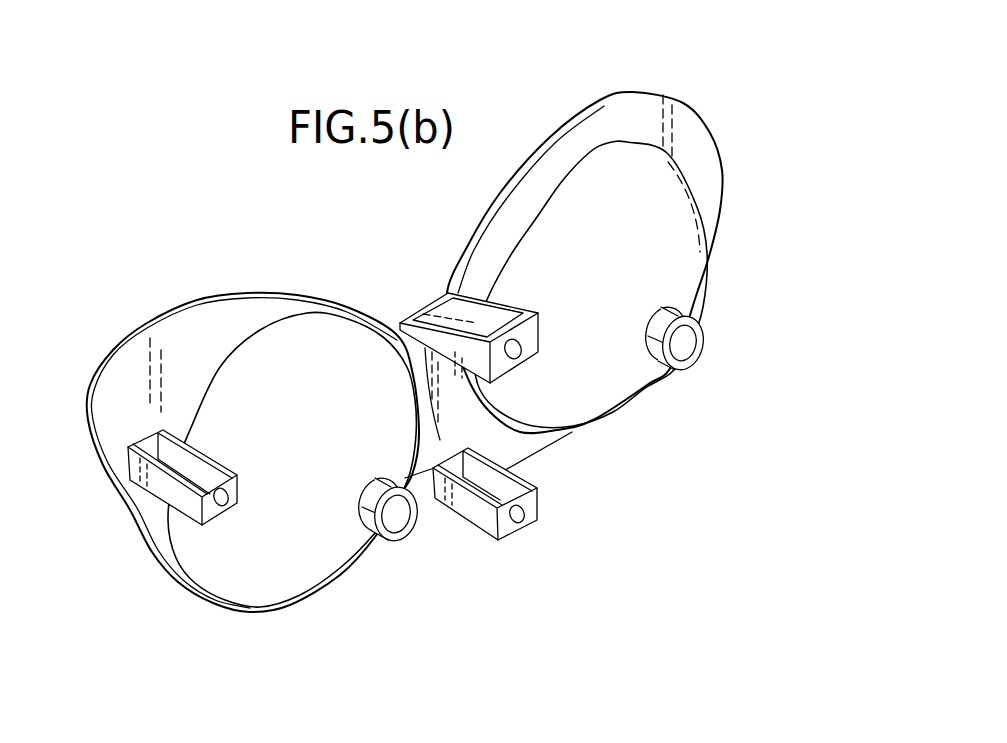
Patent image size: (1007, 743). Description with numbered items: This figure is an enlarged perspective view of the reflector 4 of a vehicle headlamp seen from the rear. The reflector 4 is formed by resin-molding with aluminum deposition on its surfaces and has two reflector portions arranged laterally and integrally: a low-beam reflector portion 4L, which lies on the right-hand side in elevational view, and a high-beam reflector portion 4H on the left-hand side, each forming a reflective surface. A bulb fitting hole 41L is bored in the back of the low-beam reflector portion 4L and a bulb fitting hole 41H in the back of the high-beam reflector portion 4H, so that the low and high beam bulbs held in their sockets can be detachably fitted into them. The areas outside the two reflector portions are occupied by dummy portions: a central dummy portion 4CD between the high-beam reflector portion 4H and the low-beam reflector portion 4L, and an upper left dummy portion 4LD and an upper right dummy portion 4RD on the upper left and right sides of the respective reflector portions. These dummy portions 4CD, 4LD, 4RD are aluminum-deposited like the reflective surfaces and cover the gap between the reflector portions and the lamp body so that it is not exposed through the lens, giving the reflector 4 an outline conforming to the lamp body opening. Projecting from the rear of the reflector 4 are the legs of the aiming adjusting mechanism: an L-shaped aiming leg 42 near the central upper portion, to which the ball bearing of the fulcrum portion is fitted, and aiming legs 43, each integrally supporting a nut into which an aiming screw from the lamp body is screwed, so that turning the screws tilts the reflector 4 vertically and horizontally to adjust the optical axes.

The reflector 4 is at (730, 148).
The low-beam reflector portion 4L is at (320, 562).
The high-beam reflector portion 4H is at (630, 410).
The upper left dummy portion 4LD is at (688, 123).
The upper right dummy portion 4RD is at (168, 343).
The central dummy portion 4CD is at (515, 447).
The L-shaped aiming leg 42 is at (495, 320).
The aiming leg 43 is at (172, 490).
The bulb fitting hole 41L is at (390, 523).
The bulb fitting hole 41H is at (693, 357).